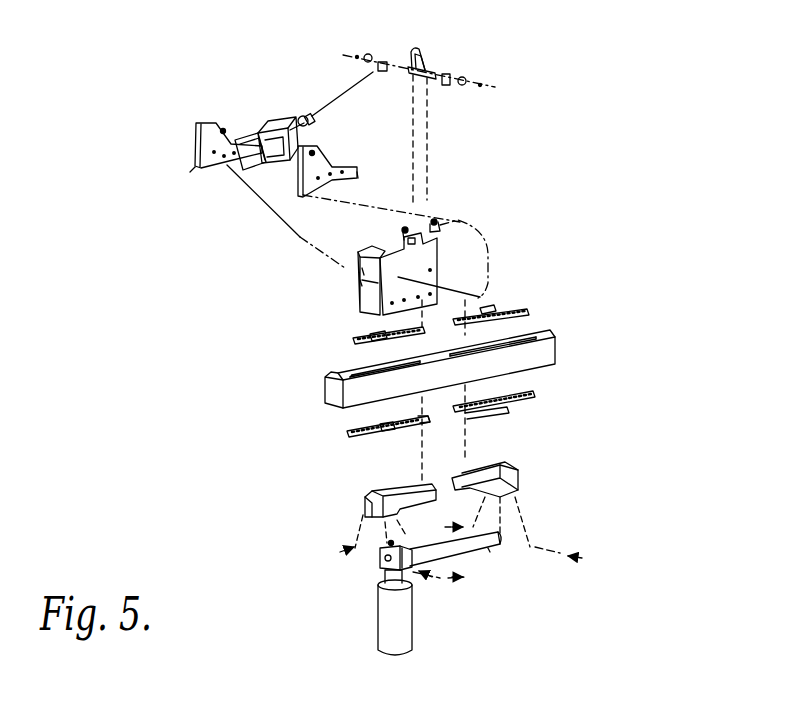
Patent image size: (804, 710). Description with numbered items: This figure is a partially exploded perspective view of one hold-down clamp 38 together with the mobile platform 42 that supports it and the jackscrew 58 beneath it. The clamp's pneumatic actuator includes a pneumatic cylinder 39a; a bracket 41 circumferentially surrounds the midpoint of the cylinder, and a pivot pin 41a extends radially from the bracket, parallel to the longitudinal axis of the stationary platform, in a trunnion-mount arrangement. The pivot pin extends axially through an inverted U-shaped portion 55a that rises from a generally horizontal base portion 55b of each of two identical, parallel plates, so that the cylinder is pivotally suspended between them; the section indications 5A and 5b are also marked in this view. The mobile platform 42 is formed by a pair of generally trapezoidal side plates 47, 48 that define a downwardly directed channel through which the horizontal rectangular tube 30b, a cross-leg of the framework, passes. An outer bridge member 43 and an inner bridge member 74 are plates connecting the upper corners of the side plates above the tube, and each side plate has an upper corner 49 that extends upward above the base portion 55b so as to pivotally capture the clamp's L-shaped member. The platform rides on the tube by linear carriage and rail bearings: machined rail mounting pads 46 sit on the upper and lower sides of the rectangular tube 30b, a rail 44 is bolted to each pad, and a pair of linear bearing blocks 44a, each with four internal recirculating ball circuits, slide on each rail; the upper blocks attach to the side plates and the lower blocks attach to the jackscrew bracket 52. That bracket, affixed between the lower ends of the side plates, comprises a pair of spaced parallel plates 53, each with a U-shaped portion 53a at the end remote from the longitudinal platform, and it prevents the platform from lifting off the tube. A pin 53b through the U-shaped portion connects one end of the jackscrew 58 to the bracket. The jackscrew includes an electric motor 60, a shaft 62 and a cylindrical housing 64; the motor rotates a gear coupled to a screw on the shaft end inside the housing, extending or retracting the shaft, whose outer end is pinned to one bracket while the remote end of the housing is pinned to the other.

The hold-down clamp 38 is at (212, 104).
The inverted U-shaped portion 55a is at (198, 124).
The base portion 55b is at (357, 176).
The section line 5A is at (192, 172).
The section line 5b is at (297, 200).
The pneumatic cylinder 39a is at (262, 127).
The bracket 41 is at (274, 120).
The pivot pin 41a is at (268, 157).
The outer bridge member 43 is at (368, 250).
The mobile platform 42 is at (458, 250).
The inner bridge member 74 is at (406, 236).
The upper corner 49 is at (433, 222).
The side plate 47 is at (362, 270).
The side plate 48 is at (360, 280).
The horizontal rectangular tube 30b is at (555, 350).
The rail mounting pad 46 is at (347, 373).
The rail 44 is at (353, 341).
The linear bearing block 44a is at (372, 336).
The plate 53 is at (385, 488).
The jackscrew bracket 52 is at (366, 504).
The U-shaped portion 53a is at (385, 512).
The pin 53b is at (452, 578).
The jackscrew 58 is at (447, 600).
The electric motor 60 is at (380, 630).
The shaft 62 is at (502, 538).
The cylindrical housing 64 is at (488, 550).